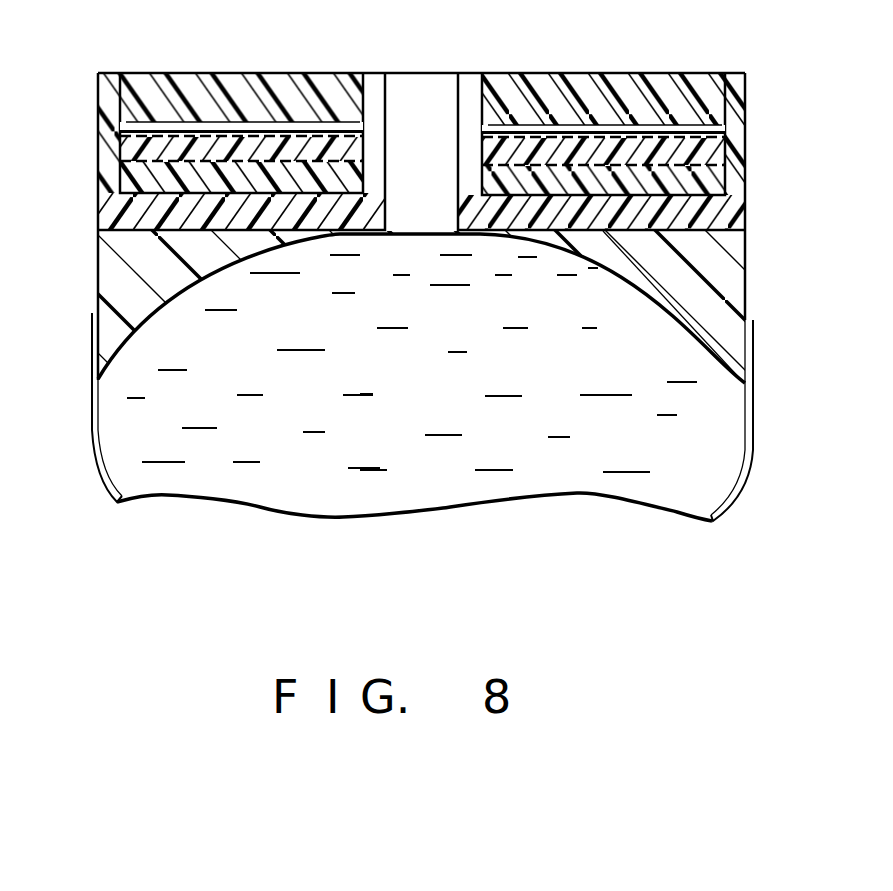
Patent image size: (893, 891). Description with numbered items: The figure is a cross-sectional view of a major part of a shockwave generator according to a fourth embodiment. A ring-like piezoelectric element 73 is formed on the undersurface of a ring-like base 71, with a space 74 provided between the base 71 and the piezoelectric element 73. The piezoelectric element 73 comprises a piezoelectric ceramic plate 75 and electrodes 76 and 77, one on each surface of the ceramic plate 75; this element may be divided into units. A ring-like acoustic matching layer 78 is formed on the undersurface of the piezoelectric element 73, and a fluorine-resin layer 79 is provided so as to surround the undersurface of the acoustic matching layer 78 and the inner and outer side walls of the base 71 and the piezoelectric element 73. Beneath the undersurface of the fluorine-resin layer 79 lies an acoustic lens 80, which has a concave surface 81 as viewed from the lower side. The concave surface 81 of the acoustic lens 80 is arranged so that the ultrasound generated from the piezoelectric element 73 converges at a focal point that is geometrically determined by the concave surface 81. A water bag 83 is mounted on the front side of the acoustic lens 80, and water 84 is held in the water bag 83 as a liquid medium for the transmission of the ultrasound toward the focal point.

The ring-like base 71 is at (673, 96).
The ring-like piezoelectric element 73 is at (262, 131).
The space 74 is at (722, 129).
The piezoelectric ceramic plate 75 is at (130, 145).
The electrode 76 is at (140, 132).
The electrode 77 is at (127, 172).
The ring-like acoustic matching layer 78 is at (716, 180).
The fluorine-resin layer 79 is at (695, 216).
The acoustic lens 80 is at (725, 341).
The concave surface 81 is at (641, 290).
The water bag 83 is at (91, 430).
The water 84 is at (127, 383).